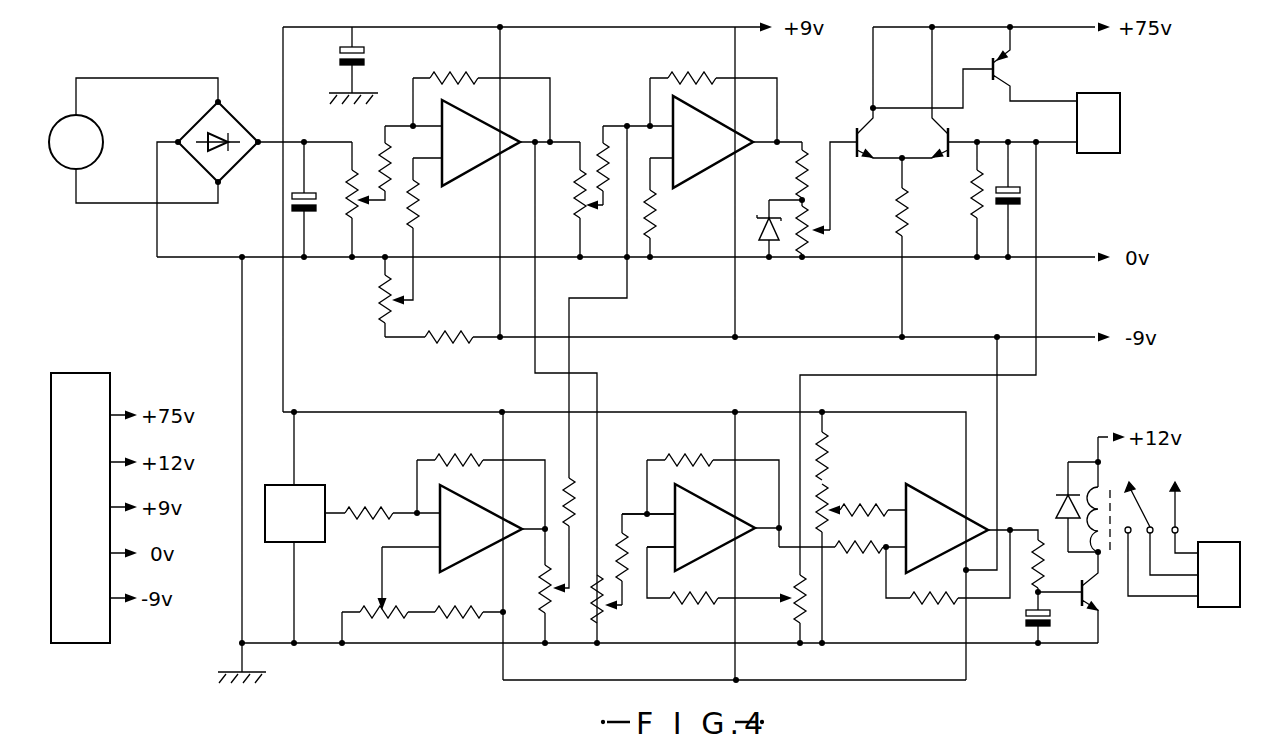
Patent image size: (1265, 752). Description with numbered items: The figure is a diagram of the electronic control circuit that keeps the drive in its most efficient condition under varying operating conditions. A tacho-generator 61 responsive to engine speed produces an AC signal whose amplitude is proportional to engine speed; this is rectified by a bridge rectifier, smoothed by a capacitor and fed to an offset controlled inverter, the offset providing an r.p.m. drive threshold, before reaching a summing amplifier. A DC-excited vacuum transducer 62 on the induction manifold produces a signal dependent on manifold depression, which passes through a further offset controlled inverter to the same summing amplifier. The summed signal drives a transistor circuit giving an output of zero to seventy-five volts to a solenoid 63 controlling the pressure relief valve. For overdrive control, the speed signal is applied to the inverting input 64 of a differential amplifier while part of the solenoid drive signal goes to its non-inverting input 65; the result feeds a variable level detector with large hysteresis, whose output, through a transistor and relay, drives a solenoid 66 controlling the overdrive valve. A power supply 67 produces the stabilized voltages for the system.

The tacho-generator 61 is at (86, 154).
The vacuum transducer 62 is at (295, 513).
The solenoid 63 is at (1109, 135).
The inverting input 64 is at (661, 512).
The non-inverting input 65 is at (661, 547).
The solenoid 66 is at (1230, 586).
The power supply 67 is at (91, 525).